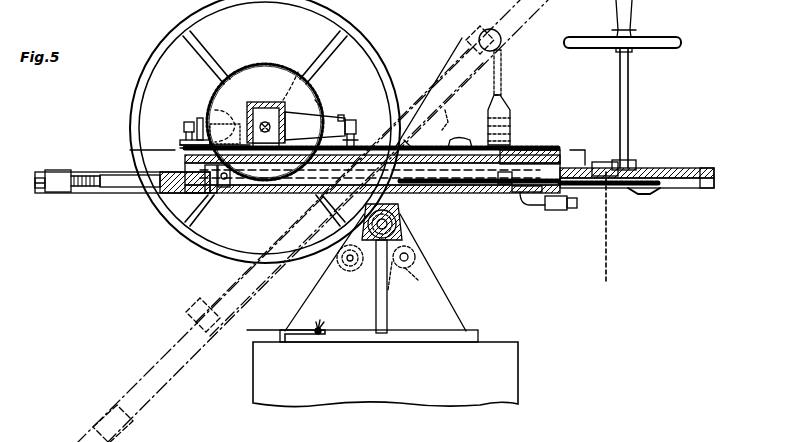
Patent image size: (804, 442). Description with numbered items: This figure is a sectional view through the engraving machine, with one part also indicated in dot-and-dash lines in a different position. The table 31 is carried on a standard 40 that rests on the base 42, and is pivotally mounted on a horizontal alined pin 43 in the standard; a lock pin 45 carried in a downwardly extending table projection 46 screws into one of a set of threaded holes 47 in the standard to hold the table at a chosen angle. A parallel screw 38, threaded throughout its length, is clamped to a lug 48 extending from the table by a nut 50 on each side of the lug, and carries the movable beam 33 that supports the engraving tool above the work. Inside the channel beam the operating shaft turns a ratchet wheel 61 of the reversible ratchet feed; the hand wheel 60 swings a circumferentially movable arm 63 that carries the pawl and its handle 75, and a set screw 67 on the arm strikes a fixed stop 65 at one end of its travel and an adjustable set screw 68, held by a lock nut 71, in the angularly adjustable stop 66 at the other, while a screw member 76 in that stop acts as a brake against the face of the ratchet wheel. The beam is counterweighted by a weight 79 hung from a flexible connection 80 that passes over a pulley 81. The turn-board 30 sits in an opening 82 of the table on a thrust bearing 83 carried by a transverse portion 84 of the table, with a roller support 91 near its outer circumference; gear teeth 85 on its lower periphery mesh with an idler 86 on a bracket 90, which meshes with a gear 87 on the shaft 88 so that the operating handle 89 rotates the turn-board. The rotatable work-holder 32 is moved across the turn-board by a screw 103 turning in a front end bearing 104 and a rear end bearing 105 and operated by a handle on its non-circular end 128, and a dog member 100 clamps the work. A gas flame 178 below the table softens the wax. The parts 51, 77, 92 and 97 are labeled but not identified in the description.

The turn-board 30 is at (460, 134).
The table 31 is at (158, 378).
The rotatable work-holder 32 is at (530, 150).
The movable beam 33 is at (262, 102).
The parallel screw 38 is at (68, 164).
The standard 40 is at (440, 300).
The base 42 is at (385, 374).
The horizontal alined pin 43 is at (388, 225).
The lock pin 45 is at (340, 262).
The downwardly extending table projection 46 is at (58, 170).
The threaded hole 47 is at (402, 270).
The lug 48 is at (96, 176).
The nut 50 is at (40, 190).
The spindle 51 is at (283, 100).
The hand wheel 60 is at (365, 55).
The ratchet wheel 61 is at (262, 66).
The circumferentially movable arm 63 is at (215, 110).
The fixed stop 65 is at (210, 147).
The angularly adjustable stop 66 is at (315, 126).
The set screw 67 is at (184, 126).
The adjustable set screw 68 is at (342, 115).
The lock nut 71 is at (356, 132).
The handle 75 is at (197, 124).
The screw member 76 is at (324, 105).
The slide plate 77 is at (180, 142).
The weight 79 is at (512, 112).
The flexible connection 80 is at (607, 228).
The pulley 81 is at (502, 40).
The opening 82 is at (525, 196).
The thrust bearing 83 is at (396, 178).
The transverse portion 84 is at (226, 190).
The gear teeth 85 is at (212, 193).
The idler 86 is at (560, 210).
The gear 87 is at (648, 194).
The shaft 88 is at (630, 122).
The operating handle 89 is at (626, 26).
The bracket 90 is at (577, 203).
The roller support 91 is at (576, 150).
The arm 92 is at (420, 88).
The bar 97 is at (428, 93).
The dog member 100 is at (453, 111).
The screw 103 is at (400, 148).
The front end bearing 104 is at (140, 175).
The rear end bearing 105 is at (530, 145).
The non-circular end 128 is at (132, 150).
The gas flame 178 is at (322, 328).